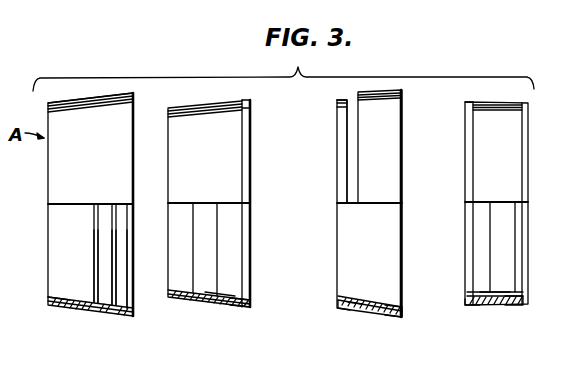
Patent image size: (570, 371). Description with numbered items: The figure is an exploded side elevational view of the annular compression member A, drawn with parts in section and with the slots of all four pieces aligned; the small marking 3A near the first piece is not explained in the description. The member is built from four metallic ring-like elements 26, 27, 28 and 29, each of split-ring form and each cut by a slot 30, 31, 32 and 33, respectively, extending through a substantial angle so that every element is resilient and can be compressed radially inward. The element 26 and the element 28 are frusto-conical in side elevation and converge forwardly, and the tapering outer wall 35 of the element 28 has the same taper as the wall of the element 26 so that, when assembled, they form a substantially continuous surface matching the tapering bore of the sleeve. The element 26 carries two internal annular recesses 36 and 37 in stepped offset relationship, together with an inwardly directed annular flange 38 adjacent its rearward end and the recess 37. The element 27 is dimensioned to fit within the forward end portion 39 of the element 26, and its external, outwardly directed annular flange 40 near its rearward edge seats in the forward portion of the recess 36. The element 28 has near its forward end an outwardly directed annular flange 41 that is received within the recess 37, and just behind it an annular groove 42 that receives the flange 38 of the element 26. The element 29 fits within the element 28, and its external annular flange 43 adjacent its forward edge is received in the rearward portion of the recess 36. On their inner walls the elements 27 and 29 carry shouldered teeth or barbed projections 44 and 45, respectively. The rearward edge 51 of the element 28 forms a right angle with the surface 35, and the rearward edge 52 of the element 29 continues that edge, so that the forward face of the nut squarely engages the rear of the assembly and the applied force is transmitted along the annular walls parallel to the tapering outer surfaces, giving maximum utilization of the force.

The section line 3A is at (88, 98).
The annular element 26 is at (134, 111).
The annular element 27 is at (253, 102).
The annular element 28 is at (405, 97).
The annular element 29 is at (523, 106).
The slot 30 is at (67, 205).
The slot 31 is at (209, 204).
The slot 32 is at (351, 204).
The slot 33 is at (483, 203).
The tapering outer wall 35 is at (383, 90).
The internal annular recess 36 is at (98, 298).
The internal annular recess 37 is at (121, 304).
The inwardly directed annular flange 38 is at (133, 309).
The forward end portion 39 is at (62, 300).
The external annular flange 40 is at (252, 306).
The outwardly directed annular flange 41 is at (345, 310).
The annular groove 42 is at (353, 310).
The external annular flange 43 is at (468, 306).
The barbed projections 44 is at (218, 295).
The barbed projections 45 is at (495, 295).
The rearward edge 51 is at (405, 316).
The rearward edge 52 is at (526, 302).